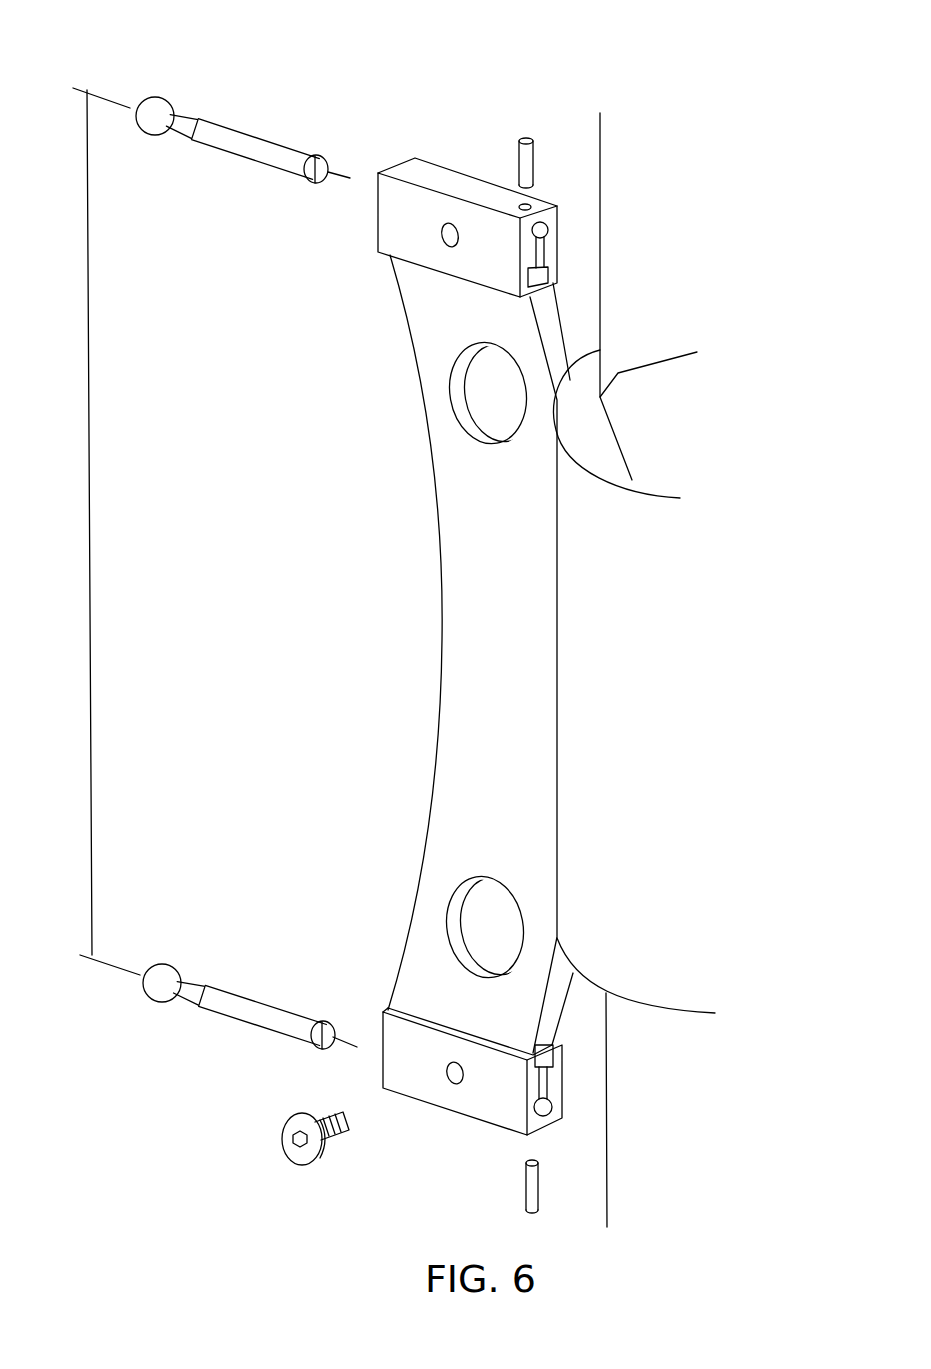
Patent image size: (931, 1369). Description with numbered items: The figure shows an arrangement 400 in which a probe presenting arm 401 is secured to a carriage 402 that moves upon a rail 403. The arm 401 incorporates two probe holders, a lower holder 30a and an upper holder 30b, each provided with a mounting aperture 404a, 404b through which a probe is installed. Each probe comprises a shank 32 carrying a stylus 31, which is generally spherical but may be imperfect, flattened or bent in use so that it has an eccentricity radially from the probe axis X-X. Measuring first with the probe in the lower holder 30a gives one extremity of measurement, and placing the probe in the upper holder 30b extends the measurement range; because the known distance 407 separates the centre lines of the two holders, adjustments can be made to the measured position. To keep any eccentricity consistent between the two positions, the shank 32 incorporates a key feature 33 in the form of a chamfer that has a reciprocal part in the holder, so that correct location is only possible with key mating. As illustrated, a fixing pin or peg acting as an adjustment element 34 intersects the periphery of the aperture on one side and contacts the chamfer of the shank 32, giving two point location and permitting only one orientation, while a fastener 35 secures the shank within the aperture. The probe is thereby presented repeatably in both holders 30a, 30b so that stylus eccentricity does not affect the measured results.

The arrangement 400 is at (462, 80).
The probe presenting arm 401 is at (467, 656).
The carriage 402 is at (696, 715).
The rail 403 is at (666, 252).
The mounting aperture 404a is at (548, 233).
The mounting aperture 404b is at (552, 1107).
The known distance 407 is at (214, 568).
The lower holder 30a is at (387, 1010).
The upper holder 30b is at (465, 262).
The stylus 31 is at (166, 100).
The shank 32 is at (251, 128).
The key feature 33 is at (297, 175).
The adjustment element 34 is at (534, 150).
The fastener 35 is at (298, 1165).